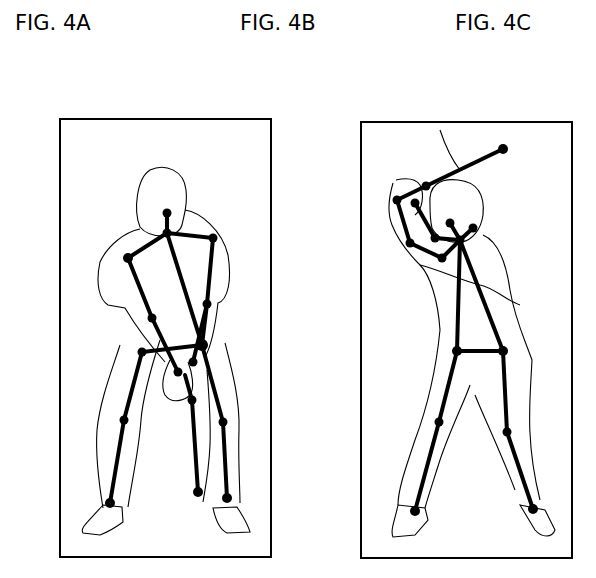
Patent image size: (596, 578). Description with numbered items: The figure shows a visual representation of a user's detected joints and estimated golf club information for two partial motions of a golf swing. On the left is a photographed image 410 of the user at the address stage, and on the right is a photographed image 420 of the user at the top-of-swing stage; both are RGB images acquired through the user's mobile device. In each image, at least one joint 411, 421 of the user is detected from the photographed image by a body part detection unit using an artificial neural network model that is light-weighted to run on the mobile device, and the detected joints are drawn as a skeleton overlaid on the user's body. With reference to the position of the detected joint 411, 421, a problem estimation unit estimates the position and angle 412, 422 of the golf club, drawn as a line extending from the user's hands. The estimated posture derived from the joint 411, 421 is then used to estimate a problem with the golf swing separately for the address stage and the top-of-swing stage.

In FIG. 4A, the photographed image 410 is at (173, 118).
In FIG. 4A, the joint 411 is at (124, 257).
In FIG. 4A, the position and angle of the golf club 412 is at (202, 452).
In FIG. 4B, the photographed image 420 is at (491, 121).
In FIG. 4B, the joint 421 is at (430, 278).
In FIG. 4B, the position and angle of the golf club 422 is at (455, 150).